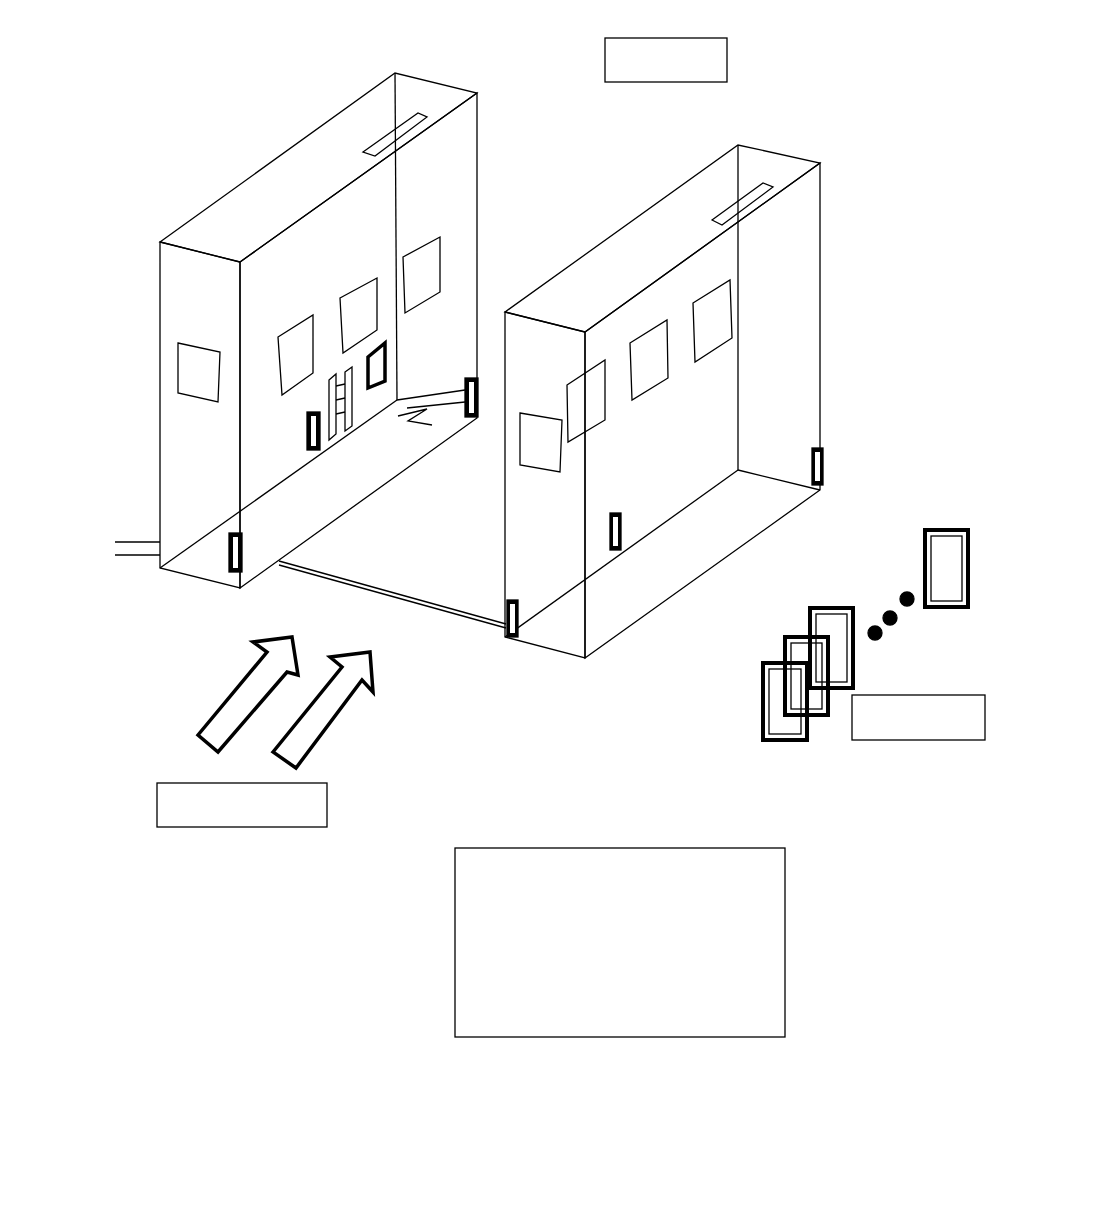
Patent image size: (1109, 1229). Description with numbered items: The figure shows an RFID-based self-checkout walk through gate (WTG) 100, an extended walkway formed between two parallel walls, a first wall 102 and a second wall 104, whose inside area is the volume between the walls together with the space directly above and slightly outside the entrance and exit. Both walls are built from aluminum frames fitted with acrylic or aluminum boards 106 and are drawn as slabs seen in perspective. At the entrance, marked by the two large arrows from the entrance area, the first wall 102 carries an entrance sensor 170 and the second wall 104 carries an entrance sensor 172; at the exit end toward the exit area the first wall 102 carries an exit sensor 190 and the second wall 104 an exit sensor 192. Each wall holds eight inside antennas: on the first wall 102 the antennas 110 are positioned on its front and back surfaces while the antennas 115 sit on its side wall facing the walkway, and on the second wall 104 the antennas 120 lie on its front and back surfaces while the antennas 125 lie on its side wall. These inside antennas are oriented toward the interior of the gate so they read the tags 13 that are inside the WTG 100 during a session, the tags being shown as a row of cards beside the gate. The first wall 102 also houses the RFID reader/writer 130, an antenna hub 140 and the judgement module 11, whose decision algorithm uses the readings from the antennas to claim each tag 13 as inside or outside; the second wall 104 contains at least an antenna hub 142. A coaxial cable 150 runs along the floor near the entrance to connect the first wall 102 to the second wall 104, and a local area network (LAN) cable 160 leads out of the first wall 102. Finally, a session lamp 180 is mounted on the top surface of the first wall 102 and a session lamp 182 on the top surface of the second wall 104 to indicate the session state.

The walk through gate 100 is at (816, 28).
The first wall 102 is at (432, 80).
The second wall 104 is at (778, 157).
The boards 106 is at (308, 157).
The antennas 110 is at (187, 368).
The antennas 115 is at (297, 320).
The antennas 120 is at (527, 447).
The antennas 125 is at (583, 437).
The RFID reader/writer 130 is at (370, 416).
The antenna hub 140 is at (287, 432).
The antenna hub 142 is at (622, 522).
The coaxial cable 150 is at (425, 600).
The local area network (LAN) cable 160 is at (138, 541).
The entrance sensor 170 is at (228, 572).
The entrance sensor 172 is at (517, 638).
The session lamp 180 is at (419, 118).
The session lamp 182 is at (767, 188).
The exit sensor 190 is at (413, 435).
The exit sensor 192 is at (823, 467).
The judgement module 11 is at (353, 380).
The tags 13 is at (828, 600).